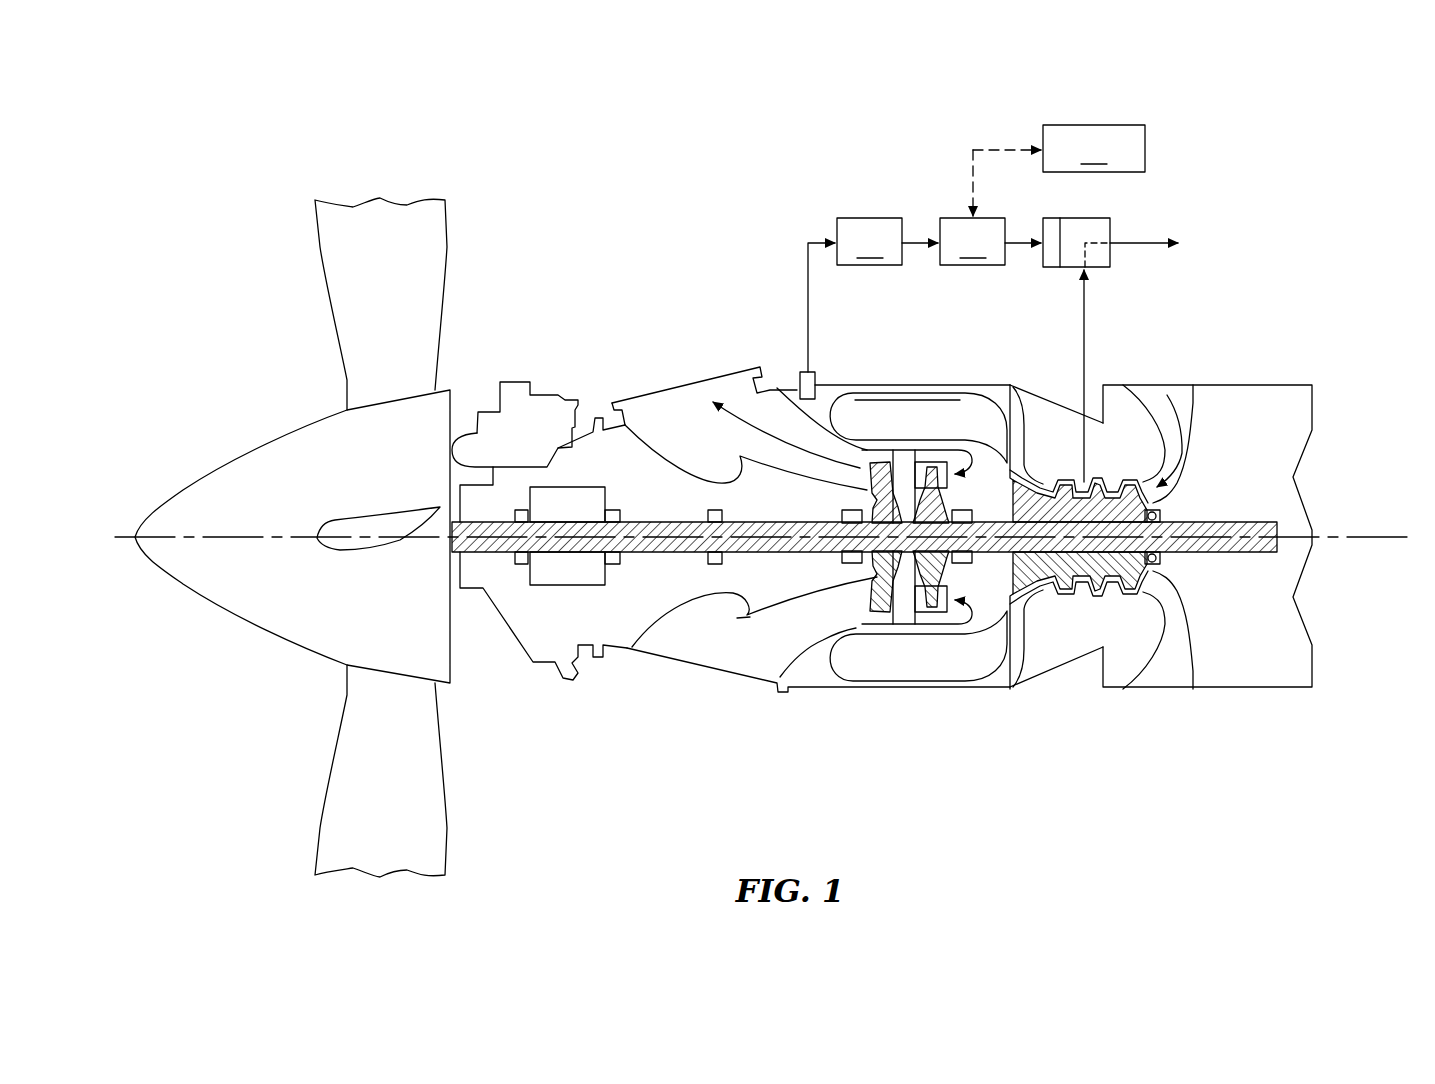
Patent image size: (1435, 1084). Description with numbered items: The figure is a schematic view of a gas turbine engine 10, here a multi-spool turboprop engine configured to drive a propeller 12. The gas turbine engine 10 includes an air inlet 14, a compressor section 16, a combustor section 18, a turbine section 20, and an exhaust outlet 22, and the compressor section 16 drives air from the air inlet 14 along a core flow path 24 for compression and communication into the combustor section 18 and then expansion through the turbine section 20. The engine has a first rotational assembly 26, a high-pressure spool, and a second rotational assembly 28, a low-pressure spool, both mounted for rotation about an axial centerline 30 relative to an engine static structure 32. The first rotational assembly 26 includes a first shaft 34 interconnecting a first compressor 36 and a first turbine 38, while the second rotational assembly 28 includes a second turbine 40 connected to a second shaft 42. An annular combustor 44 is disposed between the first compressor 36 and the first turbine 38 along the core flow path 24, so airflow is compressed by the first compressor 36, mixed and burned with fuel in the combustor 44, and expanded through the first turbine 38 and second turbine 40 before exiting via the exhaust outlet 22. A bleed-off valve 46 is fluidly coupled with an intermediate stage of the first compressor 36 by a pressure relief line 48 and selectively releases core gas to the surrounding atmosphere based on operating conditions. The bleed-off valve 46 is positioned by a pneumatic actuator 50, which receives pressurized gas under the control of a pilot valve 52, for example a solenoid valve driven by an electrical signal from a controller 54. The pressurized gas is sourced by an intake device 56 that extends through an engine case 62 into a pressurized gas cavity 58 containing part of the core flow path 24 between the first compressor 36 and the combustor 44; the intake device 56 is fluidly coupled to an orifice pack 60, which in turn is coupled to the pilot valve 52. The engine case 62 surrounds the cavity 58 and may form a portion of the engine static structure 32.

The gas turbine engine 10 is at (1345, 158).
The propeller 12 is at (292, 410).
The air inlet 14 is at (1176, 371).
The compressor section 16 is at (1061, 610).
The combustor section 18 is at (906, 690).
The turbine section 20 is at (852, 604).
The exhaust outlet 22 is at (673, 370).
The core flow path 24 is at (790, 447).
The first rotational assembly 26 is at (1200, 568).
The second rotational assembly 28 is at (769, 565).
The axial centerline 30 is at (1400, 548).
The engine static structure 32 is at (905, 383).
The first shaft 34 is at (980, 600).
The first compressor 36 is at (1110, 478).
The first turbine 38 is at (945, 609).
The second turbine 40 is at (893, 609).
The second shaft 42 is at (653, 552).
The annular combustor 44 is at (920, 410).
The bleed-off valve 46 is at (1120, 226).
The pressure relief line 48 is at (1088, 290).
The pneumatic actuator 50 is at (1050, 255).
The pilot valve 52 is at (990, 207).
The controller 54 is at (1094, 148).
The intake device 56 is at (798, 380).
The pressurized gas cavity 58 is at (825, 398).
The orifice pack 60 is at (887, 241).
The engine case 62 is at (866, 385).